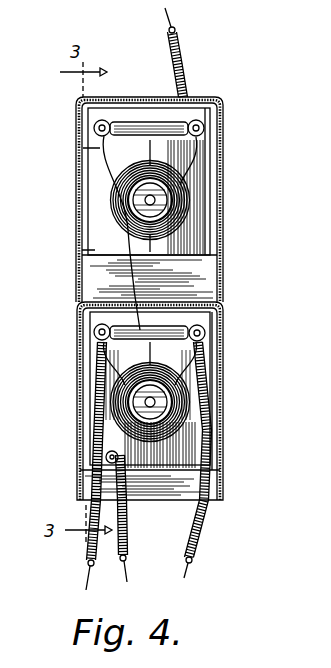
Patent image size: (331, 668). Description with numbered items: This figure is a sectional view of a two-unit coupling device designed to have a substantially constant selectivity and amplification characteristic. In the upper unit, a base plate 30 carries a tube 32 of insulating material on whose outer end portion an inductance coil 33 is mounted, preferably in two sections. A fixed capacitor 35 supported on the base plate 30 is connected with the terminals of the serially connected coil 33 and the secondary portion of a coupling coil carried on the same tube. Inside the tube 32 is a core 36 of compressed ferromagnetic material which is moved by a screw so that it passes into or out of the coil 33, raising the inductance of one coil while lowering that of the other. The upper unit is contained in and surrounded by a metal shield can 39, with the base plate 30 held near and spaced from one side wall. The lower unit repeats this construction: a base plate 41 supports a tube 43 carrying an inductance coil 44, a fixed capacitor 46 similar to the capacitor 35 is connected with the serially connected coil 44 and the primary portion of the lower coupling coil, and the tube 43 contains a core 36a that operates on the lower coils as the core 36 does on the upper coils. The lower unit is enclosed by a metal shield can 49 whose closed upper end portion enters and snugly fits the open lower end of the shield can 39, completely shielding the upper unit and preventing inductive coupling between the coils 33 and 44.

The base plate 30 is at (196, 239).
The tube 32 is at (173, 208).
The inductance coil 33 is at (110, 198).
The fixed capacitor 35 is at (134, 128).
The core 36 is at (158, 198).
The core 36a is at (160, 400).
The metal shield can 39 is at (225, 126).
The base plate 41 is at (212, 475).
The tube 43 is at (172, 410).
The inductance coil 44 is at (110, 380).
The fixed capacitor 46 is at (160, 326).
The metal shield can 49 is at (225, 458).